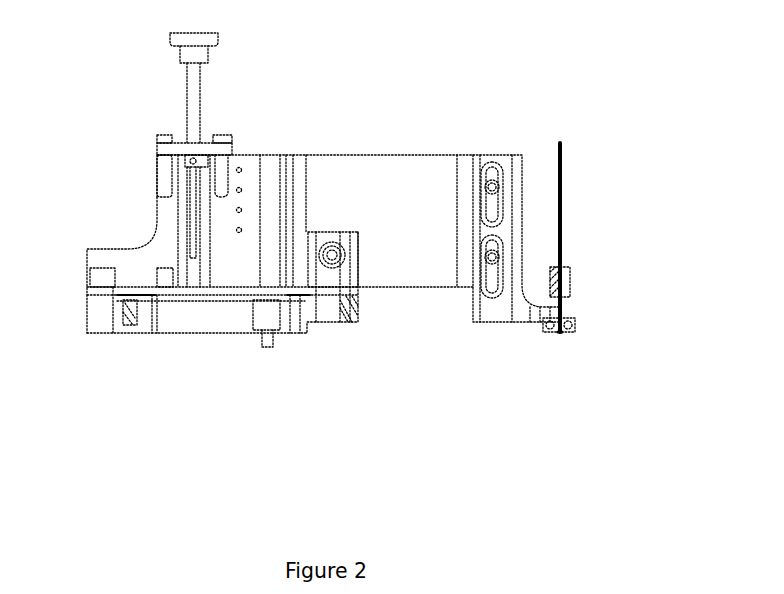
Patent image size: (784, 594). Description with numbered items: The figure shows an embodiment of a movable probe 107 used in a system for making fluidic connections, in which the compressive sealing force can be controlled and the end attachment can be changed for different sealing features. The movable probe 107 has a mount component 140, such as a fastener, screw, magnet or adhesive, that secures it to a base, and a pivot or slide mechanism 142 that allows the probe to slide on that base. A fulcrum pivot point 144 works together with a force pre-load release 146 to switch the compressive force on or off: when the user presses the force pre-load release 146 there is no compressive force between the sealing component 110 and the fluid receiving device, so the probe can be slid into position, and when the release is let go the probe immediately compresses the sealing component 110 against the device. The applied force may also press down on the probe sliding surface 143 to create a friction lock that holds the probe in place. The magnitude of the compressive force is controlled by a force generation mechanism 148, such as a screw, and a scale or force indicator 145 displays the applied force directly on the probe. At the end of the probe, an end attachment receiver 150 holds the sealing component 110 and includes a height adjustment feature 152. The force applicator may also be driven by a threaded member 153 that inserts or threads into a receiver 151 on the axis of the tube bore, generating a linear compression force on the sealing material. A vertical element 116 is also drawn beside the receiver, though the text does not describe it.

The movable probe 107 is at (362, 183).
The force generation mechanism 148 is at (183, 102).
The force indicator 145 is at (192, 213).
The force pre-load release 146 is at (103, 248).
The pivot or slide mechanism 142 is at (143, 323).
The probe sliding surface 143 is at (197, 332).
The mount component 140 is at (270, 345).
The fulcrum pivot point 144 is at (332, 255).
The end attachment receiver 150 is at (520, 320).
The height adjustment feature 152 is at (493, 175).
The guide rod 116 is at (562, 215).
The threaded member 153 is at (572, 275).
The receiver 151 is at (572, 312).
The sealing component 110 is at (573, 335).